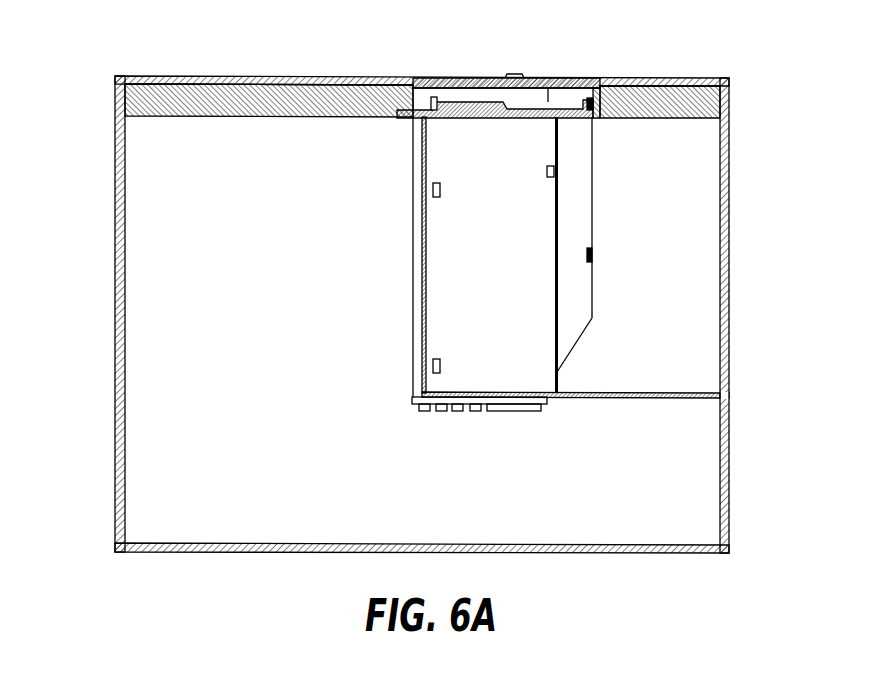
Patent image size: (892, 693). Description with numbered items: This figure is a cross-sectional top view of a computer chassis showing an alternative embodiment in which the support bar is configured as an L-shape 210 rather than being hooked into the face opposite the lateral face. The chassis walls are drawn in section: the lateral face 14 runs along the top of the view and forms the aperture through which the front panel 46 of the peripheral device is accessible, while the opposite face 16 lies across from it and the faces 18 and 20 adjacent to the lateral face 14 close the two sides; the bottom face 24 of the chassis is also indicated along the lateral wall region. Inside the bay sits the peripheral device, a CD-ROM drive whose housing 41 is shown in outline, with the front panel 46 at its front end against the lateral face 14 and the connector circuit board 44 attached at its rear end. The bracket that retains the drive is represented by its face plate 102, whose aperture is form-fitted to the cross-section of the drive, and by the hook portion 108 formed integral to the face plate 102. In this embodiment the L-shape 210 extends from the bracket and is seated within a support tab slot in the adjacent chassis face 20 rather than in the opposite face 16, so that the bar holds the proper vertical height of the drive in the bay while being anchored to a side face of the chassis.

The lateral face 14 is at (312, 76).
The bottom face 24 is at (283, 116).
The face adjacent to the lateral face 18 is at (115, 244).
The face adjacent to the lateral face 20 is at (730, 263).
The opposite face 16 is at (280, 543).
The front panel 46 is at (540, 80).
The hook portion 108 is at (583, 80).
The face plate 102 is at (585, 113).
The housing 41 is at (543, 277).
The L-shape support bar 210 is at (620, 392).
The connector circuit board 44 is at (452, 406).